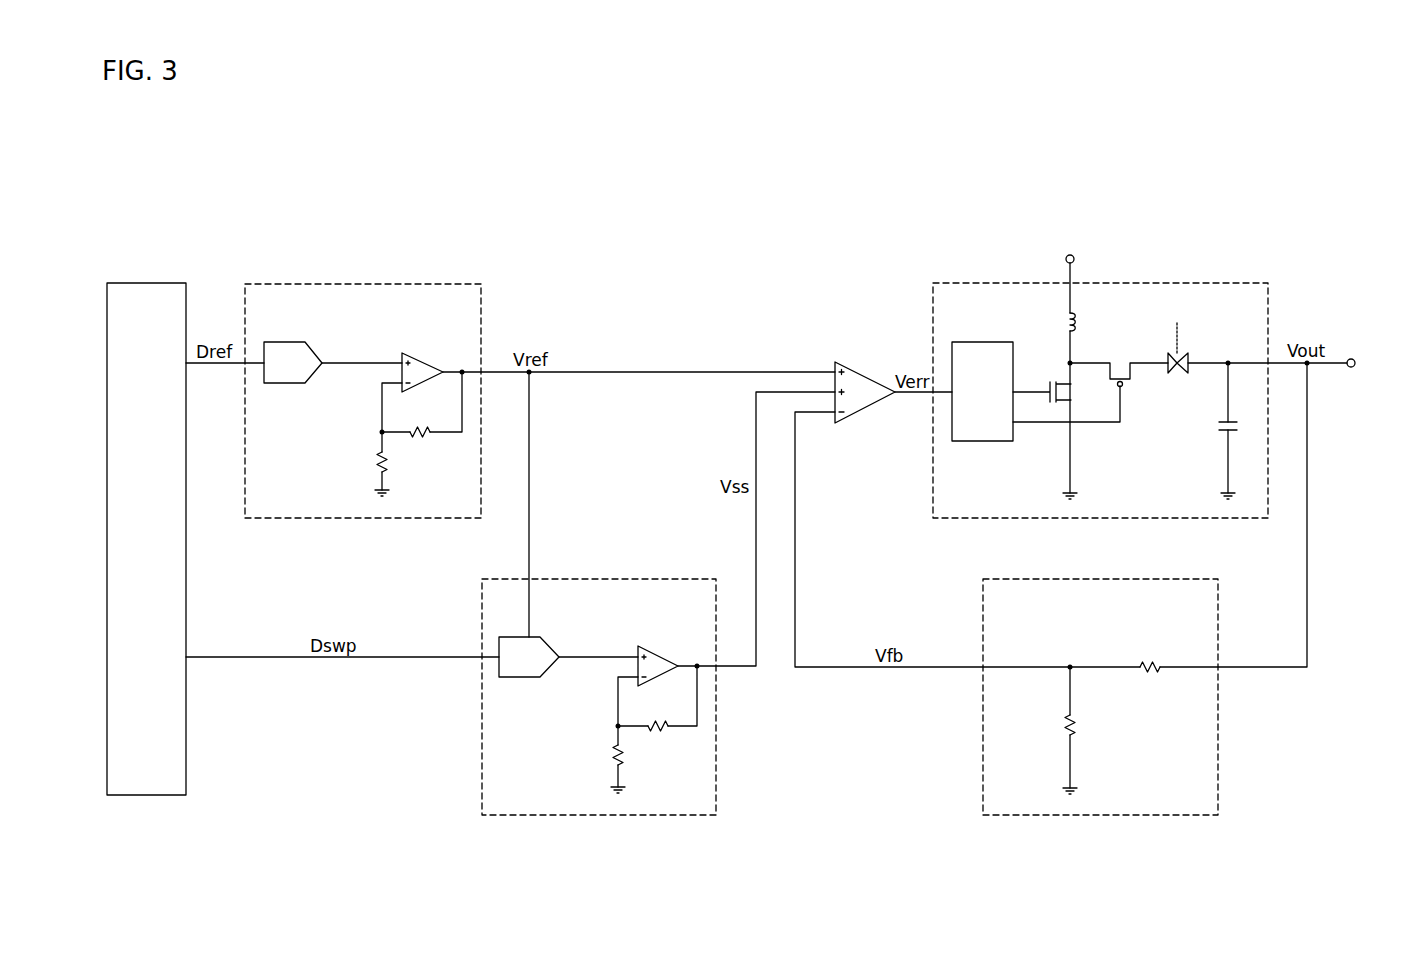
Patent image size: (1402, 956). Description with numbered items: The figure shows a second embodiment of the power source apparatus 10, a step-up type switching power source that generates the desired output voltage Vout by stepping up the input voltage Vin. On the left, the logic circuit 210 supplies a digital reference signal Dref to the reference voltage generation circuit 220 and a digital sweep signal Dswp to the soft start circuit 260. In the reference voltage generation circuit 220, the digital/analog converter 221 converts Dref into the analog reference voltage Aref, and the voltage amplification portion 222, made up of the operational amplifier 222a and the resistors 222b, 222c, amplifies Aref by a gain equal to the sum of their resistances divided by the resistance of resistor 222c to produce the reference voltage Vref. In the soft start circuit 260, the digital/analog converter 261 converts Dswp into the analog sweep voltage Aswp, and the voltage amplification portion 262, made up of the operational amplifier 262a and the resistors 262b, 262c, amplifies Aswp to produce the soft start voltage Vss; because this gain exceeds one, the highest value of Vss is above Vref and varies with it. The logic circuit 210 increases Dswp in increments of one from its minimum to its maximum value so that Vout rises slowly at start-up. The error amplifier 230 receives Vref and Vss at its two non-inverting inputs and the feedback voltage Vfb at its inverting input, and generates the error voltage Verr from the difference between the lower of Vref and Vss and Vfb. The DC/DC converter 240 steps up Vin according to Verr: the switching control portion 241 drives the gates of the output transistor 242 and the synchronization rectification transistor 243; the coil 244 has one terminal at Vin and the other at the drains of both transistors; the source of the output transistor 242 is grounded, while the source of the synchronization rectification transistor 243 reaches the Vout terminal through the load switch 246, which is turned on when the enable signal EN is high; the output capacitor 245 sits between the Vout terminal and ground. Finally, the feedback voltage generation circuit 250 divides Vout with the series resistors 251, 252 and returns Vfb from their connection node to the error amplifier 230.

The power source apparatus 10 is at (1318, 210).
The logic circuit 210 is at (151, 283).
The reference voltage generation circuit 220 is at (366, 284).
The digital/analog converter 221 is at (295, 341).
The voltage amplification portion 222 is at (462, 335).
The operational amplifier 222a is at (429, 360).
The resistor 222b is at (425, 426).
The resistor 222c is at (388, 463).
The error amplifier 230 is at (866, 376).
The DC/DC converter 240 is at (1180, 283).
The switching control portion 241 is at (983, 342).
The output transistor 242 is at (1066, 394).
The synchronization rectification transistor 243 is at (1122, 360).
The coil 244 is at (1062, 324).
The output capacitor 245 is at (1219, 428).
The load switch 246 is at (1181, 354).
The feedback voltage generation circuit 250 is at (1102, 579).
The resistor 251 is at (1150, 660).
The resistor 252 is at (1077, 729).
The soft start circuit 260 is at (600, 578).
The digital/analog converter 261 is at (530, 678).
The voltage amplification portion 262 is at (698, 628).
The operational amplifier 262a is at (664, 654).
The resistor 262b is at (660, 722).
The resistor 262c is at (624, 758).